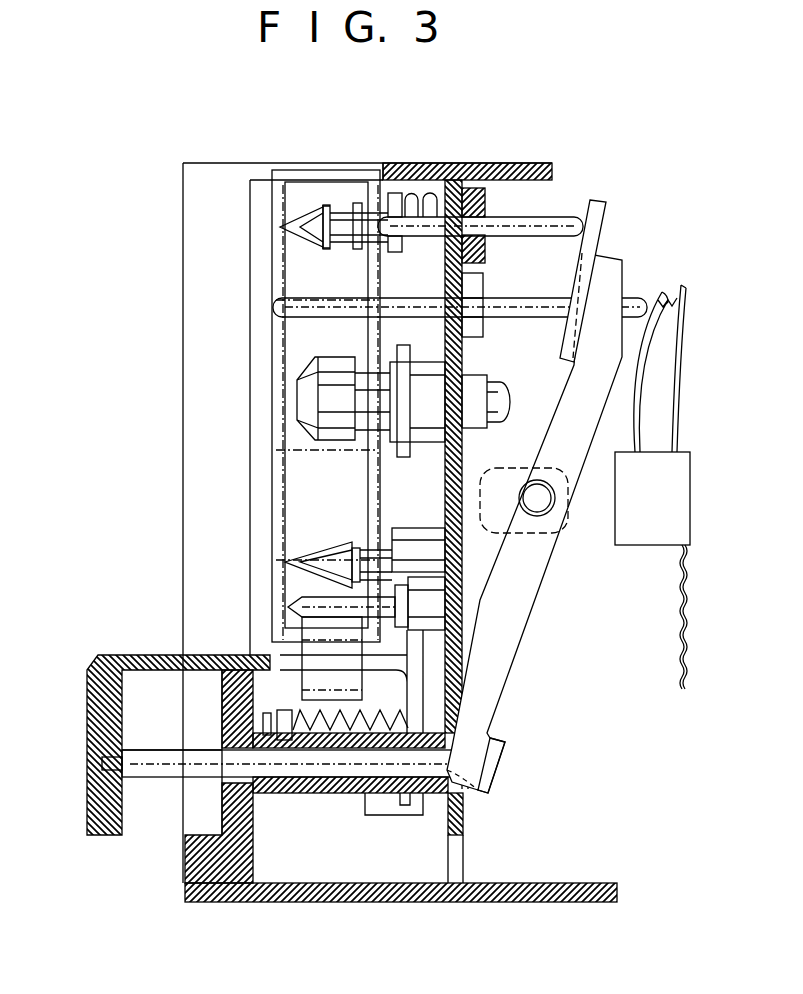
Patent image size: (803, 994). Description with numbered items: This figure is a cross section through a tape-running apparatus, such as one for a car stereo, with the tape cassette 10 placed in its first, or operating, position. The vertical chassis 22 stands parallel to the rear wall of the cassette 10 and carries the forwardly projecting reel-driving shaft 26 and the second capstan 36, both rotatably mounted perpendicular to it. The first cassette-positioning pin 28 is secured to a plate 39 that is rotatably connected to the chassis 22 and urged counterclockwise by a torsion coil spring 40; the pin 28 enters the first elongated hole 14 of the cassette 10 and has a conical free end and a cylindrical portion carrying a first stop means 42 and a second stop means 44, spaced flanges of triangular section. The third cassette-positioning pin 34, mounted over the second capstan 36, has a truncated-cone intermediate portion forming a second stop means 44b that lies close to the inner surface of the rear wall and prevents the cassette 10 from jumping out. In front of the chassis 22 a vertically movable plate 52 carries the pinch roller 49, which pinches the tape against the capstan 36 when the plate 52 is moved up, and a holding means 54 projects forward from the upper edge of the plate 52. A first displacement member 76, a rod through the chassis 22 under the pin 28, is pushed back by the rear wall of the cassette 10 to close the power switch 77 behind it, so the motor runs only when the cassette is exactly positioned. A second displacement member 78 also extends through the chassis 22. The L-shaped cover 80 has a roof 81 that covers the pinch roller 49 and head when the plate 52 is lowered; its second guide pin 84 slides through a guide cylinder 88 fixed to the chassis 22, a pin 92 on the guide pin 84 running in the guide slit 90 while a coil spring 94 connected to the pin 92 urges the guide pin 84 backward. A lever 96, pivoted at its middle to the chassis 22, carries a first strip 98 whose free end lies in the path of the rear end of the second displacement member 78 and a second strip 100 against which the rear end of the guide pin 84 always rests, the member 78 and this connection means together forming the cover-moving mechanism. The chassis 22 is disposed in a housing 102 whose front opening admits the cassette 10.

The cassette 10 is at (272, 362).
The first elongated hole 14 is at (367, 200).
The chassis 22 is at (450, 500).
The reel-driving shaft 26 is at (312, 440).
The first cassette-positioning pin 28 is at (338, 224).
The third cassette-positioning pin 34 is at (337, 548).
The second capstan 36 is at (312, 598).
The plate 39 is at (400, 250).
The torsion coil spring 40 is at (412, 194).
The first stop means 42 is at (357, 249).
The second stop means 44 is at (327, 248).
The second stop means 44b is at (356, 545).
The pinch roller 49 is at (300, 646).
The plate 52 is at (416, 714).
The holding means 54 is at (412, 668).
The first displacement member 76 is at (538, 303).
The power switch 77 is at (641, 548).
The second displacement member 78 is at (549, 224).
The cover 80 is at (86, 744).
The roof 81 is at (165, 655).
The second guide pin 84 is at (165, 778).
The guide cylinder 88 is at (318, 794).
The guide slit 90 is at (266, 726).
The pin 92 is at (285, 710).
The coil spring 94 is at (402, 716).
The lever 96 is at (522, 630).
The first strip 98 is at (598, 224).
The second strip 100 is at (493, 778).
The housing 102 is at (234, 902).